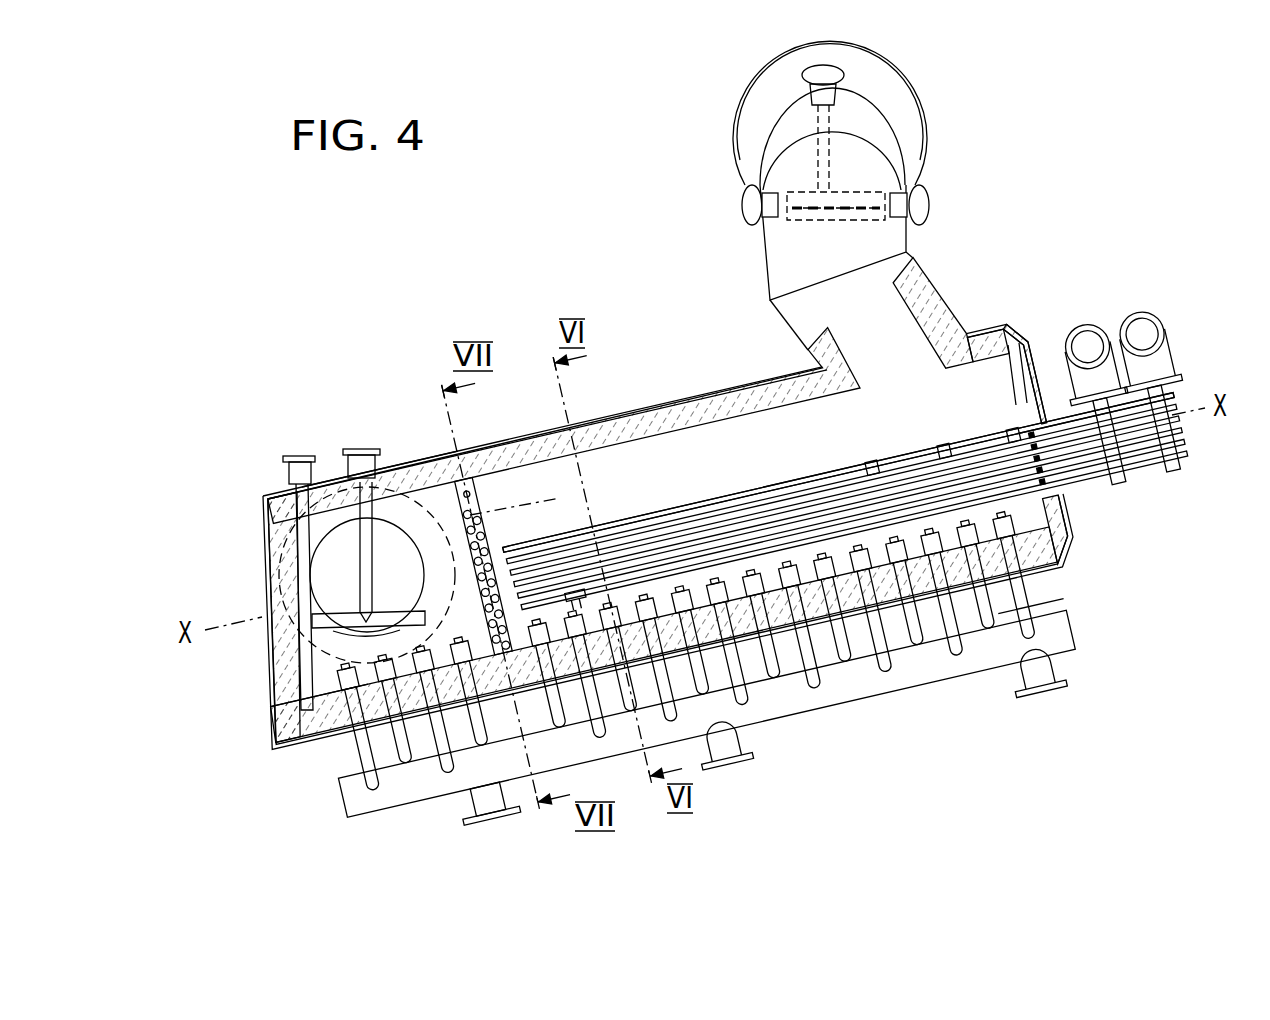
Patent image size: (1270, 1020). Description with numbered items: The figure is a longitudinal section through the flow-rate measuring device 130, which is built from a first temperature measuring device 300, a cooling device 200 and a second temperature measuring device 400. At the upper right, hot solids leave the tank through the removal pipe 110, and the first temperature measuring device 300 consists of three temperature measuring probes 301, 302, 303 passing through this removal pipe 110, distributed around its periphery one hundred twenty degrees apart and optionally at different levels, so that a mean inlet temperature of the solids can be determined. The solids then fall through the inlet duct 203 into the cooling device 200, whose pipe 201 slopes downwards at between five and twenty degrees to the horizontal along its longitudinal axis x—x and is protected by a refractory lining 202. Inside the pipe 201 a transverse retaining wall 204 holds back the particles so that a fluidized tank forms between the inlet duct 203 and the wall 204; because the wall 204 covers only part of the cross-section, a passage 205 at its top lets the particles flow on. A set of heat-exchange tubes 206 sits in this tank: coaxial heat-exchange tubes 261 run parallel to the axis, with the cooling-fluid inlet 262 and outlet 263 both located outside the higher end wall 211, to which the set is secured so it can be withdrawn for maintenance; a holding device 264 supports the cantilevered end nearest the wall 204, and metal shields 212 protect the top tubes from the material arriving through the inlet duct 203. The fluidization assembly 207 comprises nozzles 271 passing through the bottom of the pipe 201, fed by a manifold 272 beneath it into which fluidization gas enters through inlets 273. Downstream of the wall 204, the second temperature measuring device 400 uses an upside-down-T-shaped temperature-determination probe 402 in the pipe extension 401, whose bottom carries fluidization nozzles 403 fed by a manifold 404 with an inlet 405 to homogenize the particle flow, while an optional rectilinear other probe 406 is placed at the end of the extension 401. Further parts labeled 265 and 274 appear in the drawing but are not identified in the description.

The removal pipe 110 is at (878, 178).
The flow-rate measuring device 130 is at (521, 318).
The cooling device 200 is at (720, 388).
The pipe 201 is at (668, 393).
The refractory lining 202 is at (615, 430).
The inlet duct 203 is at (942, 300).
The transverse retaining wall 204 is at (450, 524).
The passage 205 is at (482, 499).
The set of heat-exchange tubes 206 is at (724, 486).
The fluidization assembly 207 is at (1038, 587).
The higher end wall 211 is at (1036, 345).
The metal shields 212 is at (957, 440).
The heat-exchange tubes 261 is at (662, 520).
The inlet 262 is at (1154, 325).
The outlet 263 is at (1090, 327).
The holding device 264 is at (574, 590).
The tube 265 is at (796, 496).
The nozzles 271 is at (1058, 498).
The manifold 272 is at (830, 698).
The inlets 273 is at (1043, 684).
The spacer plate 274 is at (1040, 598).
The first temperature measuring device 300 is at (752, 176).
The temperature measuring probe 301 is at (838, 72).
The temperature measuring probe 302 is at (744, 208).
The temperature measuring probe 303 is at (930, 210).
The second temperature measuring device 400 is at (292, 580).
The pipe extension 401 is at (385, 447).
The temperature-determination probe 402 is at (405, 476).
The fluidization nozzles 403 is at (335, 683).
The manifold 404 is at (435, 786).
The inlet 405 is at (496, 808).
The rectilinear other probe 406 is at (298, 556).